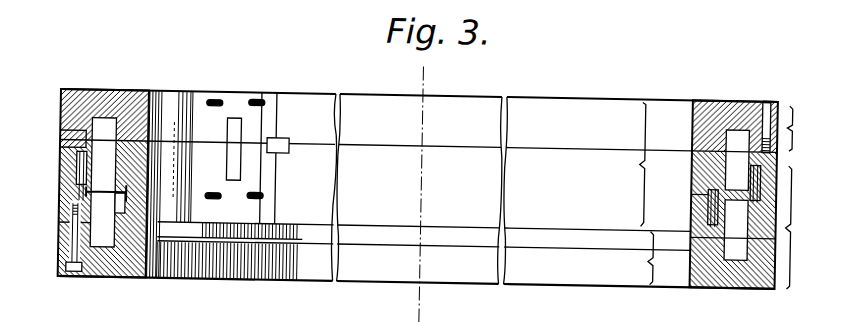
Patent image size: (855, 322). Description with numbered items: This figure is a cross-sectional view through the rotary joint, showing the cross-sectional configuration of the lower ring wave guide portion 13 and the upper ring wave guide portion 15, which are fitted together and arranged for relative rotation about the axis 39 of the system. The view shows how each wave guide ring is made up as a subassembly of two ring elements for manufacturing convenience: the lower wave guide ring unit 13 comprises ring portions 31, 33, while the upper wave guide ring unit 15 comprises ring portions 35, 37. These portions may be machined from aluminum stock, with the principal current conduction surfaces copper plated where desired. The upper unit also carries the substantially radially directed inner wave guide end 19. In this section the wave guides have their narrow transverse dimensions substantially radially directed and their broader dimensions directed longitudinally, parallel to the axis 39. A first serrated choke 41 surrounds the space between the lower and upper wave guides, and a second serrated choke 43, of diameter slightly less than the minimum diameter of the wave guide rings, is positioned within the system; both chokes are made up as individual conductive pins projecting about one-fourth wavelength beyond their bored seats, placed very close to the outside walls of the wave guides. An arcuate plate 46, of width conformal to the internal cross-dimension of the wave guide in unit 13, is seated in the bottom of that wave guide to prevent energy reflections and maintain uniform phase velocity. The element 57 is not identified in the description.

The lower ring wave guide portion 13 is at (492, 222).
The upper ring wave guide portion 15 is at (443, 159).
The inner wave guide end 19 is at (238, 116).
The ring portion 31 is at (61, 261).
The ring portion 33 is at (61, 212).
The ring portion 35 is at (153, 89).
The ring portion 37 is at (61, 137).
The axis of relative rotation 39 is at (423, 74).
The first serrated choke 41 is at (80, 168).
The second serrated choke 43 is at (152, 225).
The arcuate plate 46 is at (106, 248).
The plate 57 is at (88, 191).